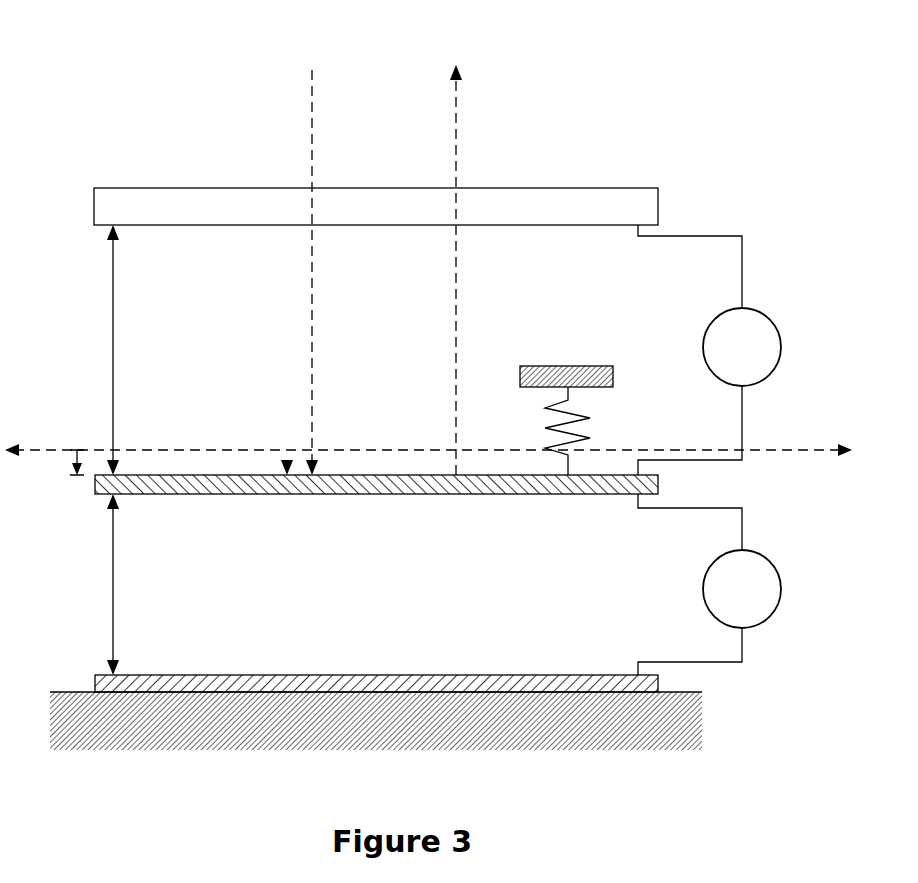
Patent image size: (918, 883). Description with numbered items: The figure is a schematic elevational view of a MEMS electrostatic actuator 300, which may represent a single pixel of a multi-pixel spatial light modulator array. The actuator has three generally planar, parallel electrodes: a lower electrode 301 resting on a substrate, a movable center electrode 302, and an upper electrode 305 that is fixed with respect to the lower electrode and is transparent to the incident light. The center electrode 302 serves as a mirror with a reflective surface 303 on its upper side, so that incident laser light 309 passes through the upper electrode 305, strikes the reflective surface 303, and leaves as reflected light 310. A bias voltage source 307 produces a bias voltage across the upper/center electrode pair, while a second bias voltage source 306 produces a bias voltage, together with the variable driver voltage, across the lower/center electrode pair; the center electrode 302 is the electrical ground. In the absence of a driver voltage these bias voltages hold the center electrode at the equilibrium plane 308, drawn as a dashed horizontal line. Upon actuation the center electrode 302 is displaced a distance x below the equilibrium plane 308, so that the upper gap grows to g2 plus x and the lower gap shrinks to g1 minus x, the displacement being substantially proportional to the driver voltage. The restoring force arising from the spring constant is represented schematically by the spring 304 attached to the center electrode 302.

The MEMS electrostatic actuator 300 is at (164, 56).
The lower electrode 301 is at (213, 675).
The movable center electrode 302 is at (258, 497).
The reflective surface 303 is at (287, 462).
The spring 304 is at (582, 437).
The upper electrode 305 is at (621, 188).
The second bias voltage source 306 is at (779, 602).
The bias voltage source 307 is at (779, 354).
The equilibrium plane 308 is at (792, 452).
The incident light 309 is at (310, 146).
The reflected light 310 is at (457, 150).